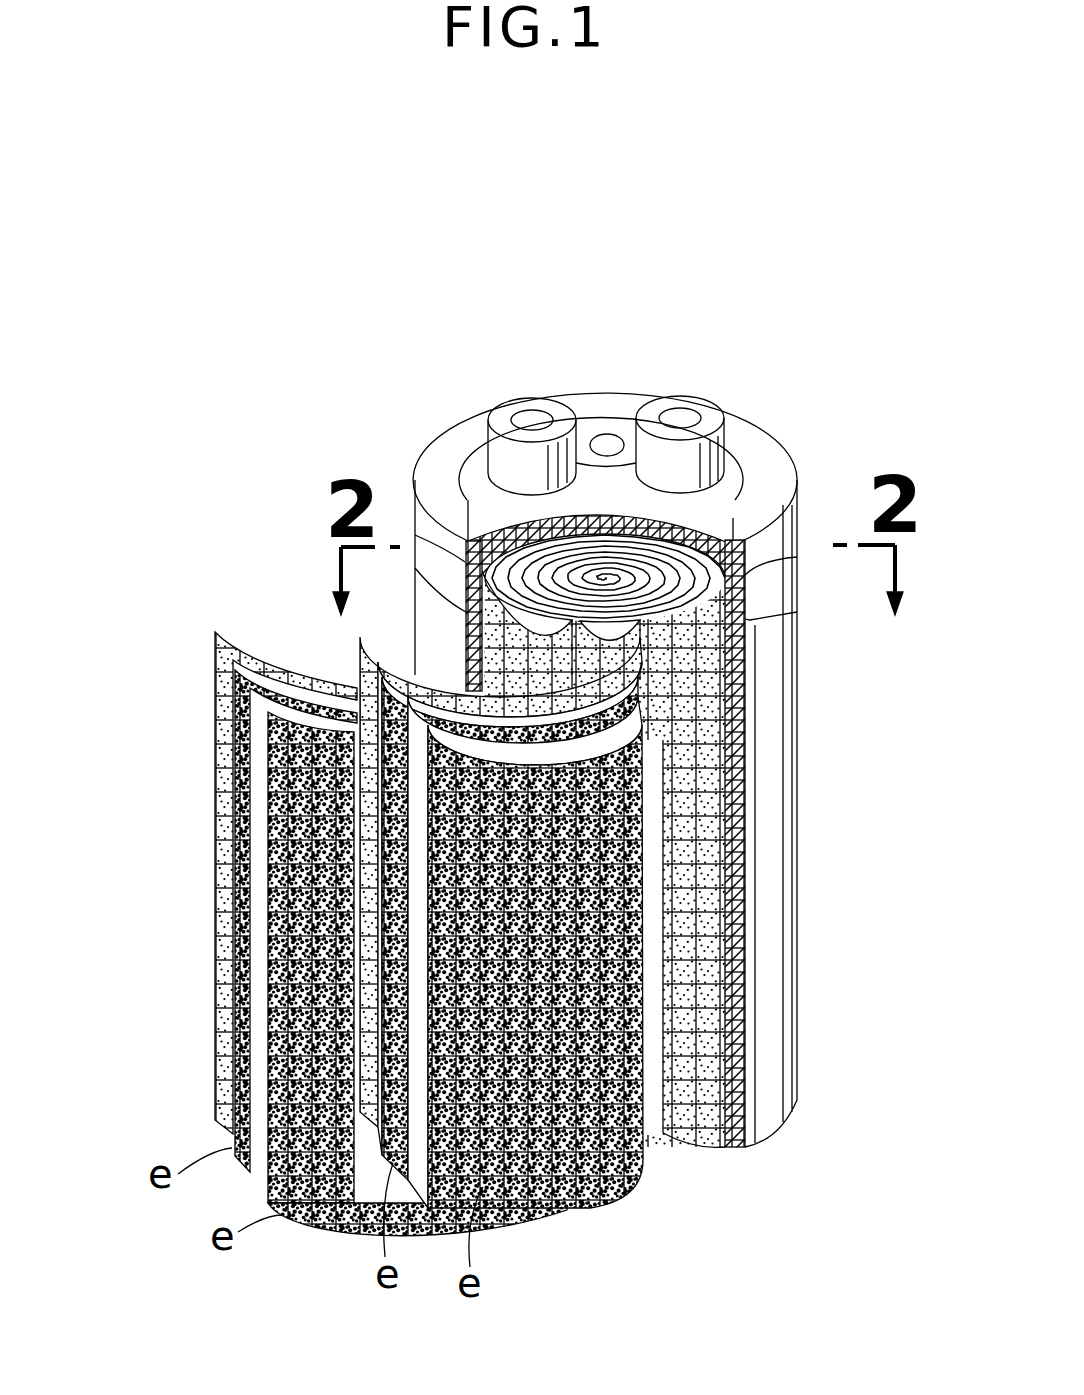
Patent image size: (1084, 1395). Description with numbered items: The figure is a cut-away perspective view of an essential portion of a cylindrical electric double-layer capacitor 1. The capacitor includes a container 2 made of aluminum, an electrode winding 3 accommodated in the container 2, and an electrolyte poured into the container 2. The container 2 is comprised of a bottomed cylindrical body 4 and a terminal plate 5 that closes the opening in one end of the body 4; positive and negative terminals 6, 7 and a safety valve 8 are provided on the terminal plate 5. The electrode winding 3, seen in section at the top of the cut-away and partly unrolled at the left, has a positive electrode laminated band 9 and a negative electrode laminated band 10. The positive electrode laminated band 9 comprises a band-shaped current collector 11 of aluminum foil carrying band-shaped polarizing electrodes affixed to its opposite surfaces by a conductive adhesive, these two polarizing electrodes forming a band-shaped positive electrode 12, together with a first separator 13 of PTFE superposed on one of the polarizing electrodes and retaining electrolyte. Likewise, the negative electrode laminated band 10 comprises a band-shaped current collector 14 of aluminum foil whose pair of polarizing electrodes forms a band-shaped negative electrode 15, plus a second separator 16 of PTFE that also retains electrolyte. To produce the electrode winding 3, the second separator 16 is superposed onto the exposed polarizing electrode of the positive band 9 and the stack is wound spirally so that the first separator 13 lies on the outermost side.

The cylindrical electric double-layer capacitor 1 is at (643, 690).
The container 2 is at (803, 846).
The electrode winding 3 is at (706, 958).
The bottomed cylindrical body 4 is at (775, 770).
The terminal plate 5 is at (475, 480).
The positive terminal 6 is at (503, 413).
The negative terminal 7 is at (672, 403).
The safety valve 8 is at (607, 430).
The positive electrode laminated band 9 is at (309, 877).
The negative electrode laminated band 10 is at (529, 944).
The band-shaped current collector 11 is at (258, 882).
The band-shaped positive electrode 12 is at (222, 1254).
The first separator 13 is at (215, 760).
The band-shaped current collector 14 is at (425, 962).
The band-shaped negative electrode 15 is at (483, 1290).
The second separator 16 is at (360, 645).